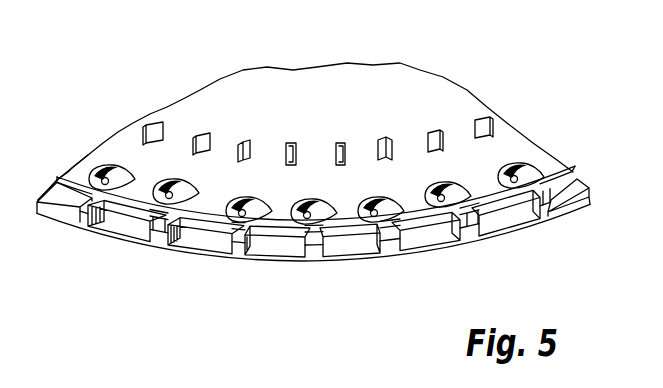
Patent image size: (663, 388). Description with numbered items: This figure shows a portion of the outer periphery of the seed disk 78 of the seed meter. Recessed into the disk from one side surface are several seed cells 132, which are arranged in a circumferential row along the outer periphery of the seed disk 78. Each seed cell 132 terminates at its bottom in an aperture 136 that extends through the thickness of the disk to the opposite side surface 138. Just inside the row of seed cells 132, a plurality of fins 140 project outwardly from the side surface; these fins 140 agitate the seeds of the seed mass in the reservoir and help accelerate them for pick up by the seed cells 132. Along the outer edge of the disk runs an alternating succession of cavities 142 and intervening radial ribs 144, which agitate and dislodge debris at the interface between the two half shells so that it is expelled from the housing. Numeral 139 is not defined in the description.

The seed disk 78 is at (267, 66).
The side surface 138 is at (106, 141).
The mounting plate 139 is at (503, 138).
The fins 140 is at (337, 148).
The seed cells 132 is at (185, 182).
The aperture 136 is at (177, 199).
The cavities 142 is at (340, 253).
The radial ribs 144 is at (157, 232).